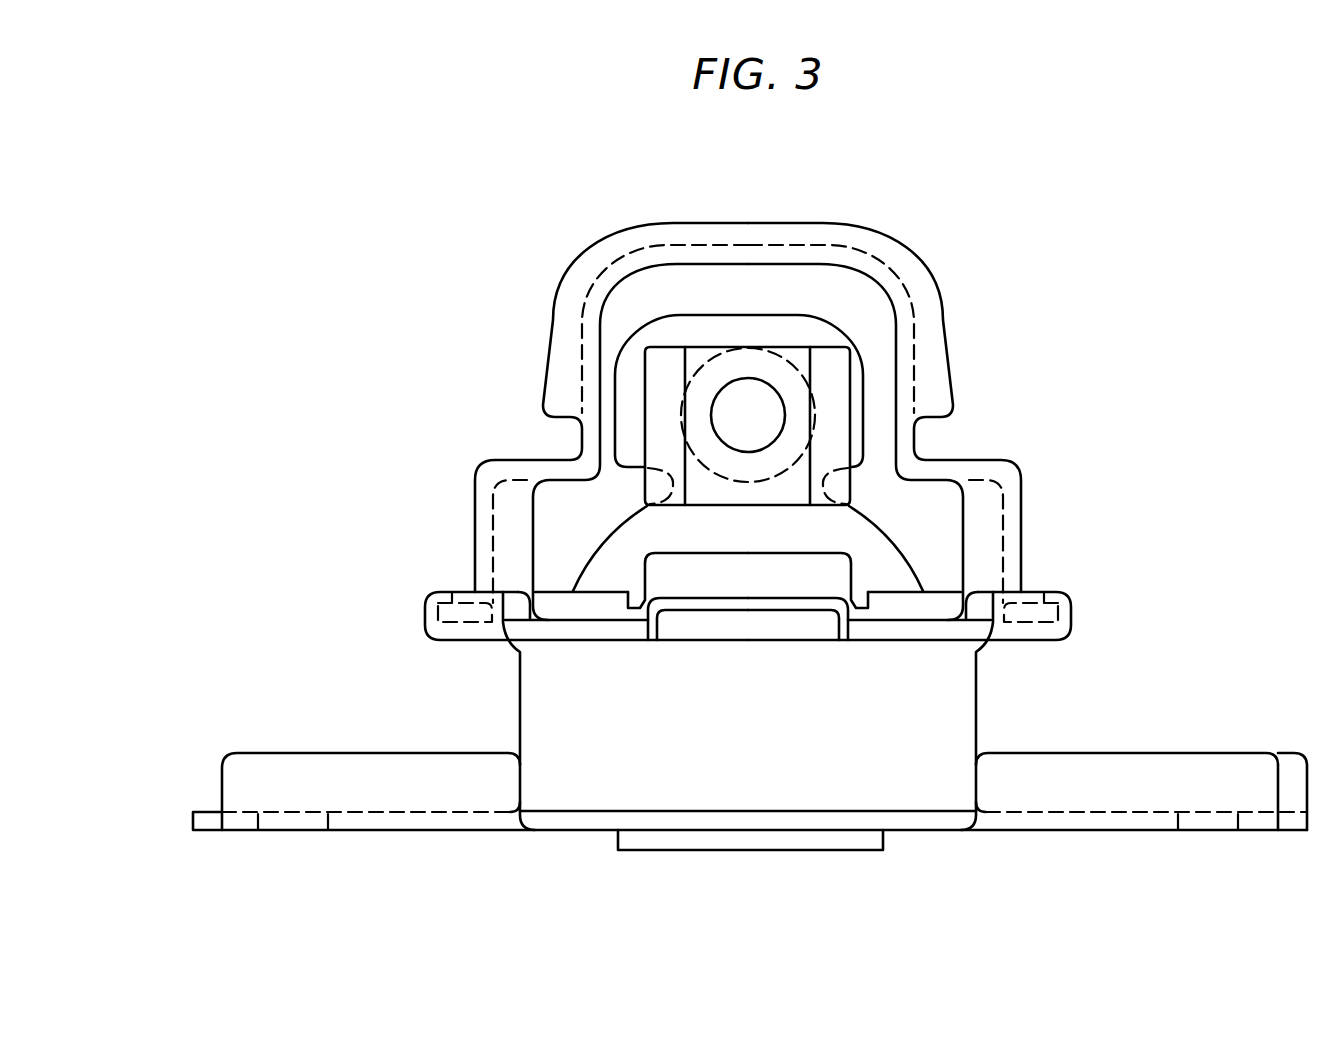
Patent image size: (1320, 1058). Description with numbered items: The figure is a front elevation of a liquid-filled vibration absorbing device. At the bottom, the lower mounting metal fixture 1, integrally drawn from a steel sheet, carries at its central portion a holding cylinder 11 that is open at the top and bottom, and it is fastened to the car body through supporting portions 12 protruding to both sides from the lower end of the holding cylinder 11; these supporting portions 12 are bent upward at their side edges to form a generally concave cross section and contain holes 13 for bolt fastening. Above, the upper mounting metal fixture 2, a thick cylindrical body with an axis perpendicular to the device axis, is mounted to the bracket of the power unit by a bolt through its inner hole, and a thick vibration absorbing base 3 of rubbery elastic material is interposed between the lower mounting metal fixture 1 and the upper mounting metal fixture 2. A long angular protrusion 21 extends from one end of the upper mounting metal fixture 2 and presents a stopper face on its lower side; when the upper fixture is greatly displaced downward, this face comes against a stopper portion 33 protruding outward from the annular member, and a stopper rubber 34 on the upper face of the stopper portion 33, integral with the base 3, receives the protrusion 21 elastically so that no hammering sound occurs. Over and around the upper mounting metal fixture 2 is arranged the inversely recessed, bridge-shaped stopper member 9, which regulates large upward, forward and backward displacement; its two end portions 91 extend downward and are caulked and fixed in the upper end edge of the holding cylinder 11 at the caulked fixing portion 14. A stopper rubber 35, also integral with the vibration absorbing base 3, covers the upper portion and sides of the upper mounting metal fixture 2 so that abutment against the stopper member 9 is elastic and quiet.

The lower mounting metal fixture 1 is at (492, 818).
The upper mounting metal fixture 2 is at (722, 345).
The vibration absorbing base 3 is at (860, 527).
The stopper member 9 is at (888, 255).
The holding cylinder 11 is at (955, 705).
The supporting portions 12 is at (372, 818).
The holes for bolt fastening 13 is at (266, 818).
The caulked fixing portion 14 is at (426, 612).
The protrusion 21 is at (808, 345).
The stopper portion 33 is at (805, 603).
The stopper rubber 34 is at (702, 575).
The stopper rubber 35 is at (773, 323).
The end portions 91 is at (487, 553).